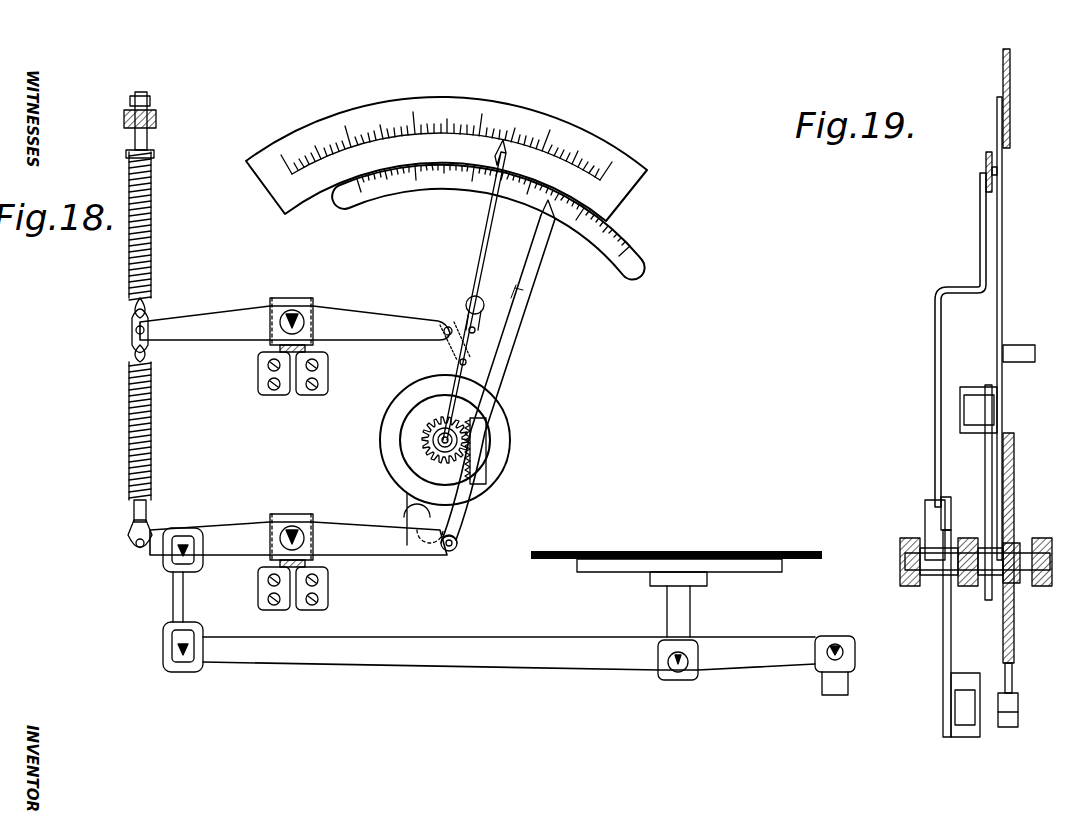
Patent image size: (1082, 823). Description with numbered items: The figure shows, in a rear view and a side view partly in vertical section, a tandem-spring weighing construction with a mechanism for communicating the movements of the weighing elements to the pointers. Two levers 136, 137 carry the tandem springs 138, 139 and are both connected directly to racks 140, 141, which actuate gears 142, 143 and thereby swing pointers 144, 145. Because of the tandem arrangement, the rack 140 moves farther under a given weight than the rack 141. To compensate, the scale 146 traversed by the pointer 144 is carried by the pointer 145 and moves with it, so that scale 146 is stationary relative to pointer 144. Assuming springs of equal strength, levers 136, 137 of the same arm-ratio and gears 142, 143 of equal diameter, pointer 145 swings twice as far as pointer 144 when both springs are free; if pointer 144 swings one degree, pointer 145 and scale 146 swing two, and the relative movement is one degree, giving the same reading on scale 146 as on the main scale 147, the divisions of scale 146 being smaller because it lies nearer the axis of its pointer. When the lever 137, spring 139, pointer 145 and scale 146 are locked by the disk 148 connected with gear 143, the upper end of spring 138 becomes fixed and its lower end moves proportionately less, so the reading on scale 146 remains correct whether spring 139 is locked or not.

In FIG. 18, the lever 136 is at (250, 528).
In FIG. 18, the lever 137 is at (213, 320).
In FIG. 18, the tandem spring 138 is at (152, 434).
In FIG. 18, the tandem spring 139 is at (153, 231).
In FIG. 18, the rack 140 is at (486, 448).
In FIG. 19, the rack 140 is at (946, 627).
In FIG. 18, the rack 141 is at (430, 440).
In FIG. 19, the rack 141 is at (990, 607).
In FIG. 18, the gear 142 is at (472, 478).
In FIG. 19, the gear 142 is at (942, 588).
In FIG. 19, the gear 143 is at (983, 593).
In FIG. 18, the pointer 144 is at (490, 349).
In FIG. 19, the pointer 144 is at (981, 230).
In FIG. 18, the pointer 145 is at (487, 234).
In FIG. 19, the pointer 145 is at (1002, 280).
In FIG. 18, the scale 146 is at (606, 250).
In FIG. 19, the scale 146 is at (986, 158).
In FIG. 18, the scale 147 is at (540, 122).
In FIG. 19, the scale 147 is at (1003, 73).
In FIG. 18, the disk 148 is at (486, 397).
In FIG. 19, the disk 148 is at (1011, 468).